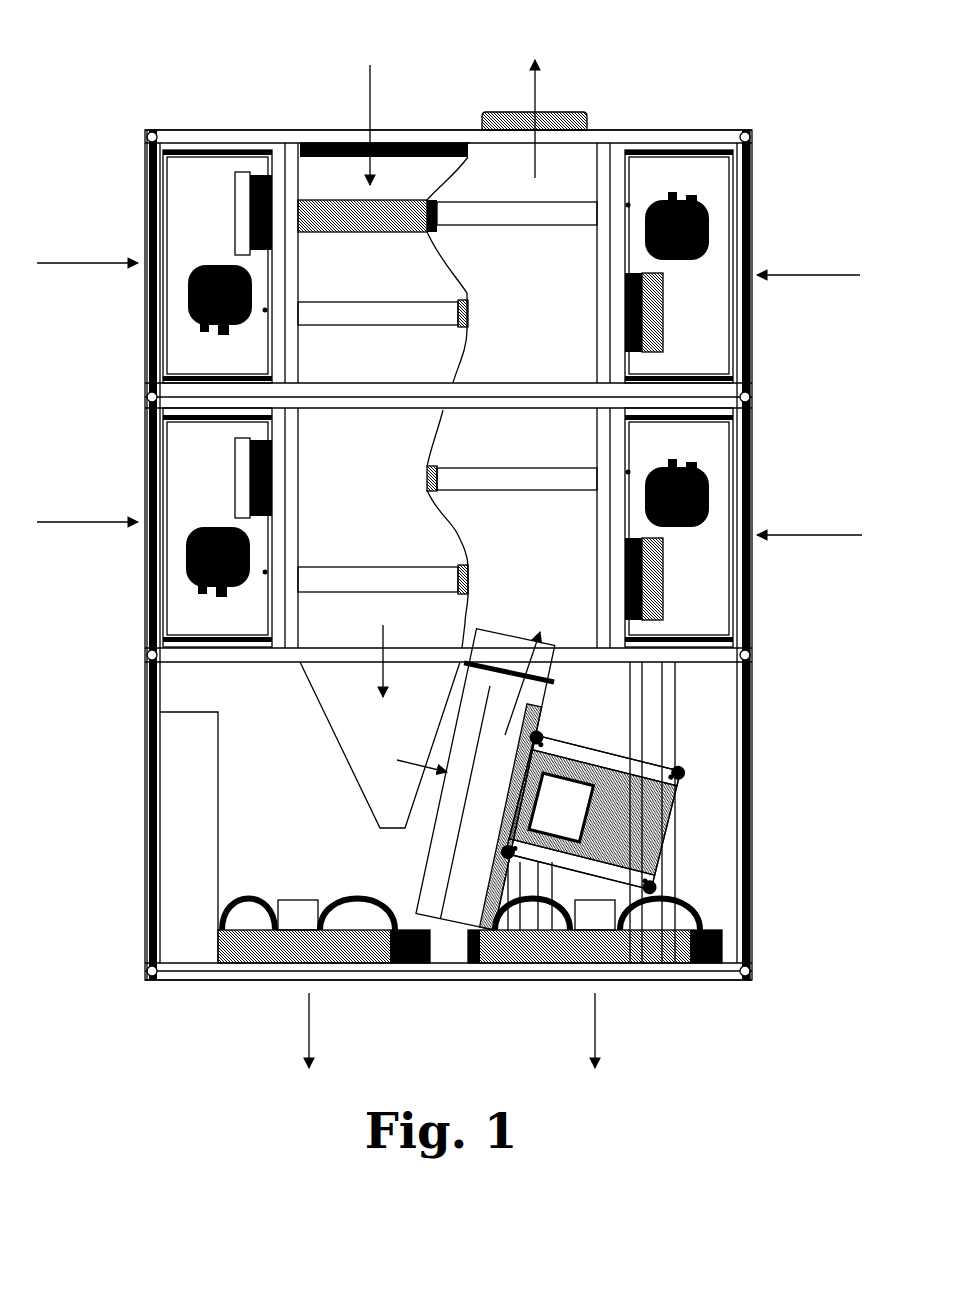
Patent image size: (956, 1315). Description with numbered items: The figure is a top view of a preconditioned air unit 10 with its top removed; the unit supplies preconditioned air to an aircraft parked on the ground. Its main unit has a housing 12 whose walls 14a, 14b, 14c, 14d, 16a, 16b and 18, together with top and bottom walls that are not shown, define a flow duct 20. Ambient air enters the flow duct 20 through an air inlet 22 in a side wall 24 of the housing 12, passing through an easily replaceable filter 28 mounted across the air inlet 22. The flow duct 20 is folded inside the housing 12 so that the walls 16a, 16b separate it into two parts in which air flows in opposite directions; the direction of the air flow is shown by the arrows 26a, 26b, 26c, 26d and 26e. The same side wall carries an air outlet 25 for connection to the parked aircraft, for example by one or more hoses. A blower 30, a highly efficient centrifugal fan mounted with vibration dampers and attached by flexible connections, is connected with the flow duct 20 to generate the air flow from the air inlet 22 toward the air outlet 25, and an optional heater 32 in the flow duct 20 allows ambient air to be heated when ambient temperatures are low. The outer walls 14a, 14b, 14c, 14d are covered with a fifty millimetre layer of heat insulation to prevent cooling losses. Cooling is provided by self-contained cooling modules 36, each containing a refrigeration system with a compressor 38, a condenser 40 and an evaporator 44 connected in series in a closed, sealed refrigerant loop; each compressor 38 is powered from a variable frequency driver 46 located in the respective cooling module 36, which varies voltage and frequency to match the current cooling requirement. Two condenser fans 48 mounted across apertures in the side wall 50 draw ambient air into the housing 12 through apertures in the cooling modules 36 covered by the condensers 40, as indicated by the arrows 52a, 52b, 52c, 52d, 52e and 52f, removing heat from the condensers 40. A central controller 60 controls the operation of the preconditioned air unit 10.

The preconditioned air unit 10 is at (197, 93).
The housing 12 is at (670, 130).
The outer wall 14a is at (298, 270).
The outer wall 14b is at (298, 530).
The outer wall 14c is at (598, 430).
The outer wall 14d is at (598, 316).
The wall 16a is at (470, 258).
The wall 16b is at (466, 530).
The wall 18 is at (365, 795).
The flow duct 20 is at (528, 291).
The air inlet 22 is at (372, 143).
The side wall 24 is at (713, 130).
The air outlet 25 is at (530, 118).
The arrow 26a is at (378, 72).
The arrow 26b is at (380, 688).
The arrow 26c is at (410, 756).
The arrow 26d is at (540, 632).
The arrow 26e is at (545, 90).
The filter 28 is at (330, 145).
The blower 30 is at (479, 799).
The heater 32 is at (346, 226).
The self-contained cooling module 36 is at (189, 254).
The compressor 38 is at (187, 287).
The condenser 40 is at (148, 340).
The evaporator 44 is at (518, 224).
The variable frequency driver 46 is at (243, 222).
The condenser fan 48 is at (286, 954).
The side wall 50 is at (200, 965).
The arrow 52a is at (78, 262).
The arrow 52b is at (78, 522).
The arrow 52c is at (813, 535).
The arrow 52d is at (813, 275).
The arrow 52e is at (309, 1027).
The arrow 52f is at (597, 1040).
The central controller 60 is at (174, 849).